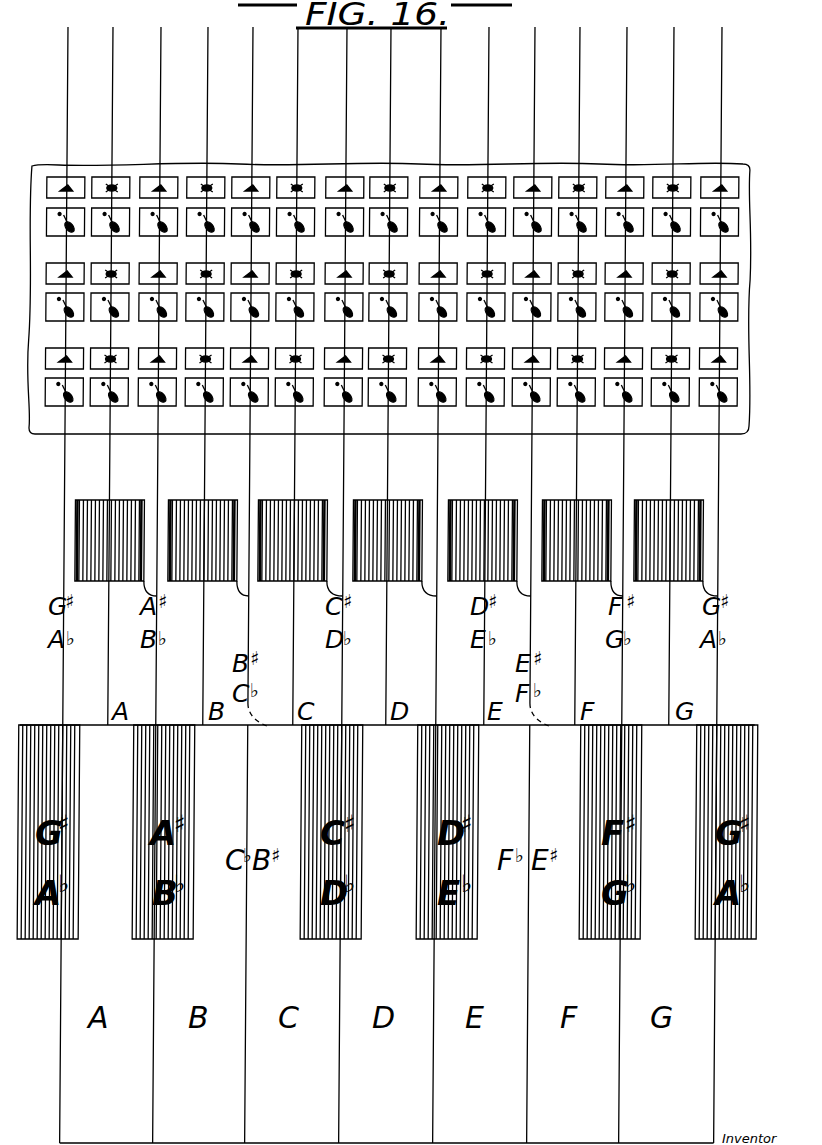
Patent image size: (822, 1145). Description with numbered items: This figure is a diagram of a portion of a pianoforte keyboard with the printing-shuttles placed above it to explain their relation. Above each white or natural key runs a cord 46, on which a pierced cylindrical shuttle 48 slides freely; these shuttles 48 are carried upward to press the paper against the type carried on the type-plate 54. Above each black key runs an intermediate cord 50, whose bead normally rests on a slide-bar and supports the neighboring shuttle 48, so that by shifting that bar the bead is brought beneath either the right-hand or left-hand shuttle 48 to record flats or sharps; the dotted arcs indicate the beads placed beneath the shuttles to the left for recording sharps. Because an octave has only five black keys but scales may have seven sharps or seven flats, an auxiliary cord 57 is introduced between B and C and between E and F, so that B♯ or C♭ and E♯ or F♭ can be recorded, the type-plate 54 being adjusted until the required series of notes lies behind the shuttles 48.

The cord 46 is at (379, 376).
The intermediate cord 50 is at (382, 585).
The auxiliary cord 57 is at (390, 585).
The shuttle 48 is at (397, 548).
The type-plate 54 is at (396, 298).